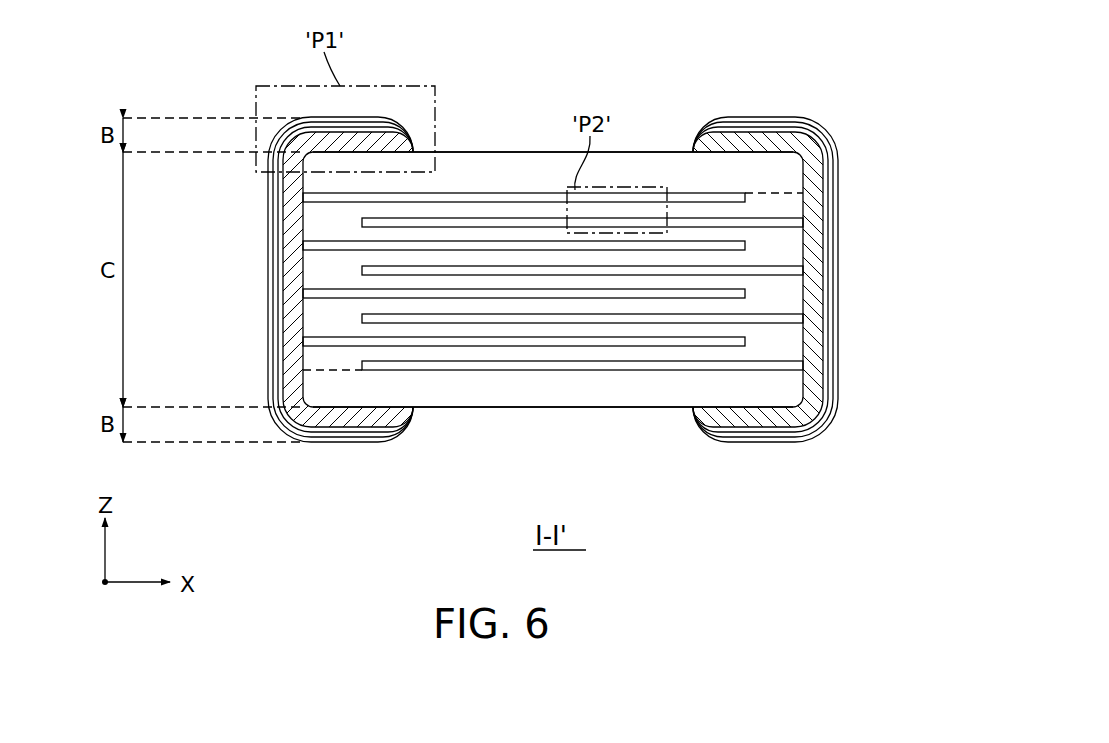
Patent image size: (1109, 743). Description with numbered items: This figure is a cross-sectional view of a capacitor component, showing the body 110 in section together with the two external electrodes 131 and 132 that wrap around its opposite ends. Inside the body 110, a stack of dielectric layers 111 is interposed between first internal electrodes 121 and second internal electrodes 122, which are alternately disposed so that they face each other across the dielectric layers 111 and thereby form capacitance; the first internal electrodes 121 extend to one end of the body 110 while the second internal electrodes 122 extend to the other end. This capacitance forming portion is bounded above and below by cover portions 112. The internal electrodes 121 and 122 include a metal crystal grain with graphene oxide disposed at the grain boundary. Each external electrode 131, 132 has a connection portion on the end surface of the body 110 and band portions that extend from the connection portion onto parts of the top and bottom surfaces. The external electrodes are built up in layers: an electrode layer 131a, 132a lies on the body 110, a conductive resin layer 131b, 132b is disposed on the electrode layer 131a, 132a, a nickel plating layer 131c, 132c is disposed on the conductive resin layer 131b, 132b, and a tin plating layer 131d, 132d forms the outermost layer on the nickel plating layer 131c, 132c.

The body 110 is at (500, 150).
The dielectric layer 111 is at (445, 233).
The cover portion 112 is at (538, 170).
The first internal electrode 121 is at (625, 198).
The second internal electrode 122 is at (655, 222).
The external electrode 131 is at (275, 279).
The electrode layer 131a is at (286, 275).
The conductive resin layer 131b is at (281, 305).
The nickel plating layer 131c is at (276, 335).
The tin plating layer 131d is at (191, 268).
The external electrode 132 is at (836, 279).
The electrode layer 132a is at (822, 270).
The conductive resin layer 132b is at (827, 298).
The nickel plating layer 132c is at (832, 329).
The tin plating layer 132d is at (837, 358).